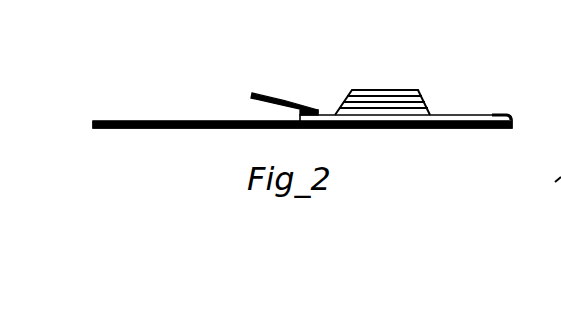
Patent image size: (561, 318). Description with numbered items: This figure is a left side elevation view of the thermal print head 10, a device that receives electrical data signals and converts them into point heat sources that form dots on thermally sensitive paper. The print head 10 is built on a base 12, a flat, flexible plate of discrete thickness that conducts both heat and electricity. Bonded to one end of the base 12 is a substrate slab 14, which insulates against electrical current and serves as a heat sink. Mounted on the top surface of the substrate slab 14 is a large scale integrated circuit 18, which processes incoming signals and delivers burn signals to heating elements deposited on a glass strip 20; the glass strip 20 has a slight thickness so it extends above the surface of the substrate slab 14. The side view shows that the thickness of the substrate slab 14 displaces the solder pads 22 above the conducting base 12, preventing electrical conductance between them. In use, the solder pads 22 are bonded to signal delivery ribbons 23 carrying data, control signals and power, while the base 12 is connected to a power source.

The thermal print head 10 is at (423, 129).
The base 12 is at (203, 121).
The substrate slab 14 is at (461, 115).
The large scale integrated circuit 18 is at (390, 90).
The glass strip 20 is at (499, 114).
The solder pads 22 is at (313, 110).
The signal delivery ribbons 23 is at (258, 93).